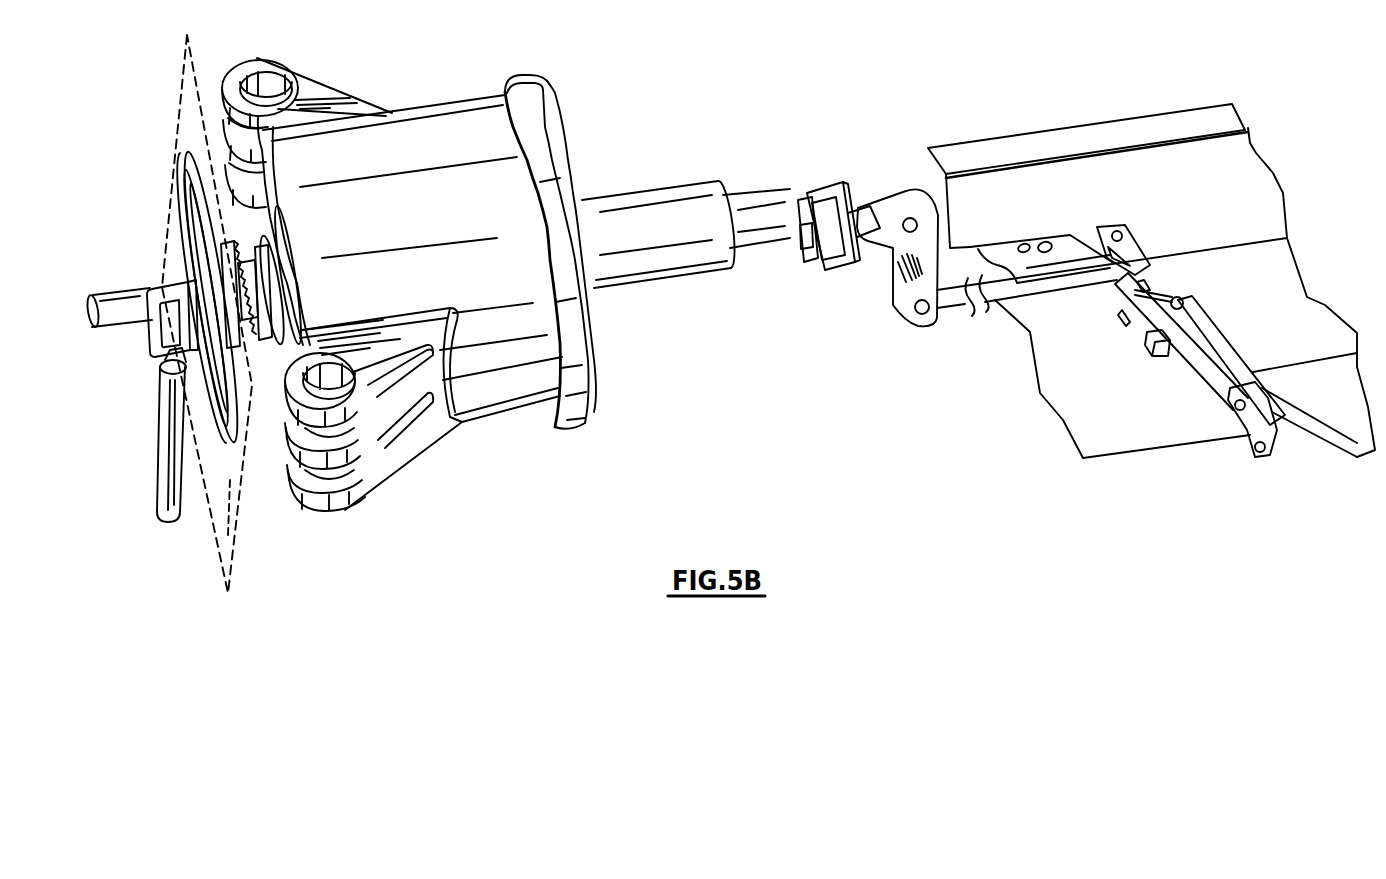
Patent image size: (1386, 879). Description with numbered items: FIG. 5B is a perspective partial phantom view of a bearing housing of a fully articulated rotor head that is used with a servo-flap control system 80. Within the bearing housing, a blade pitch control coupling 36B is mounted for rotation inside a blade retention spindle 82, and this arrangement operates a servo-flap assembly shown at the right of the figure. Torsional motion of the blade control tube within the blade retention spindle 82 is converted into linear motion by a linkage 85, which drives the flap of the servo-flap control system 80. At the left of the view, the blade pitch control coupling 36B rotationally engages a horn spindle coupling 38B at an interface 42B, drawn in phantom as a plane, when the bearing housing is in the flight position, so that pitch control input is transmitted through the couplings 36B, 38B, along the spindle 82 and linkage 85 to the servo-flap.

The blade pitch control coupling 36B is at (185, 345).
The horn spindle coupling 38B is at (160, 369).
The interface 42B is at (242, 543).
The blade retention spindle 82 is at (662, 270).
The linkage 85 is at (906, 214).
The servo-flap control system 80 is at (1183, 103).